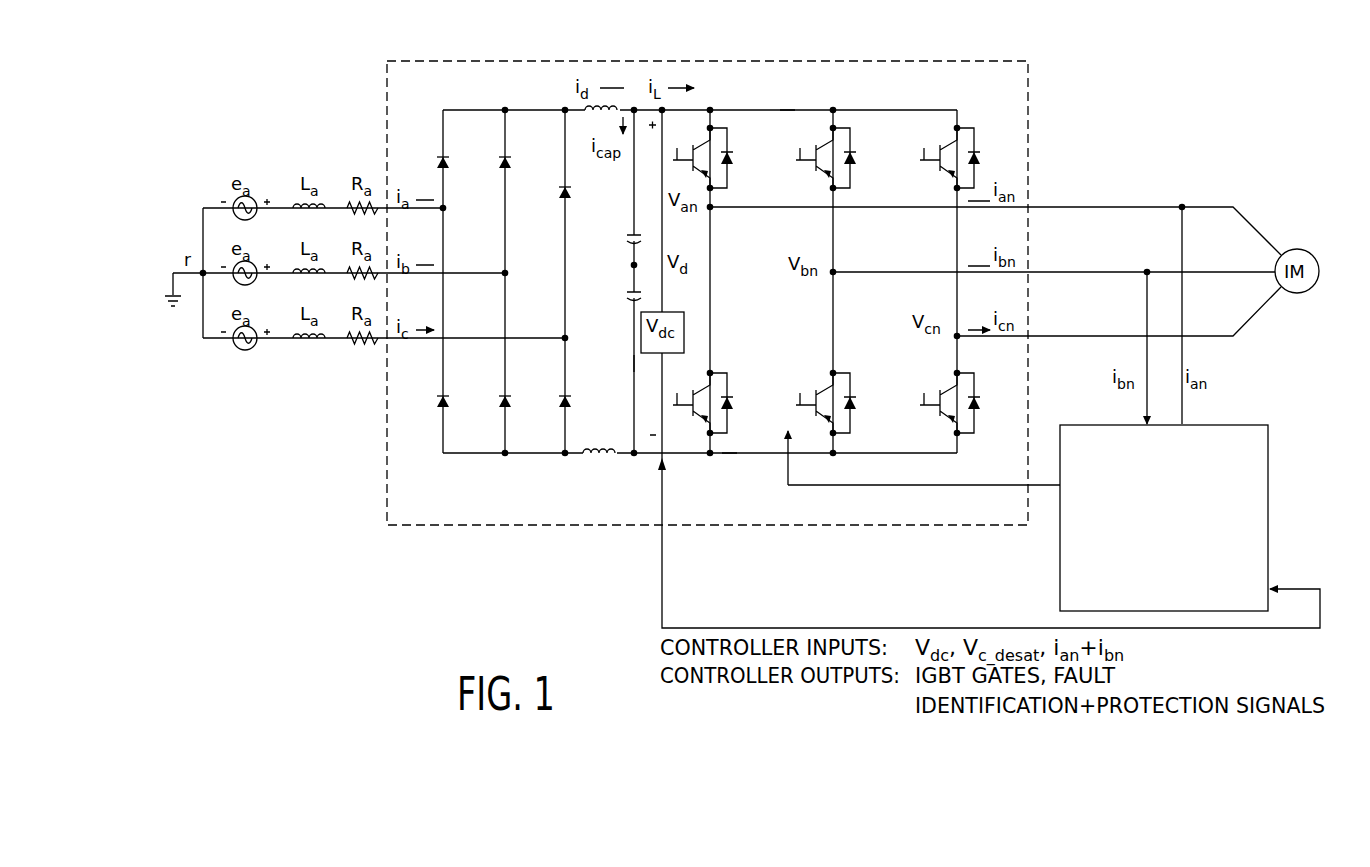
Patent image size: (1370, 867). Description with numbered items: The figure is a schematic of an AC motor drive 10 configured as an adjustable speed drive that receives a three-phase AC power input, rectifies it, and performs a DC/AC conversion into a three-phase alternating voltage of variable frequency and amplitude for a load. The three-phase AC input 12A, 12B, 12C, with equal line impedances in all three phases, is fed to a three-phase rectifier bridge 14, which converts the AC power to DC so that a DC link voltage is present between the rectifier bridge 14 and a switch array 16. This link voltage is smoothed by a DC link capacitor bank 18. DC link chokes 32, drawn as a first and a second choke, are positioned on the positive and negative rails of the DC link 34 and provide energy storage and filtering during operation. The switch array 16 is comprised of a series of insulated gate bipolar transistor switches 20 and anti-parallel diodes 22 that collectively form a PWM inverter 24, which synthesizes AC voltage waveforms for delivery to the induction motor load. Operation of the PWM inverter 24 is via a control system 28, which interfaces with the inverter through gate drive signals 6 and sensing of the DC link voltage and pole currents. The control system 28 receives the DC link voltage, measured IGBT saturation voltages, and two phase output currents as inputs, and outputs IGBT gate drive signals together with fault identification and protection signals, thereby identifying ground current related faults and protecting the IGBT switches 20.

The gate signal line 6 is at (924, 458).
The AC motor drive 10 is at (1030, 85).
The three-phase AC input 12A is at (252, 217).
The three-phase AC input 12B is at (252, 282).
The three-phase AC input 12C is at (252, 347).
The three-phase rectifier bridge 14 is at (457, 471).
The switch array 16 is at (763, 493).
The DC link capacitor bank 18 is at (641, 233).
The insulated gate bipolar transistor switches 20 is at (812, 276).
The anti-parallel diodes 22 is at (977, 401).
The PWM inverter 24 is at (789, 316).
The control system 28 is at (1268, 518).
The DC link chokes 32 is at (589, 105).
The DC link 34 is at (786, 108).